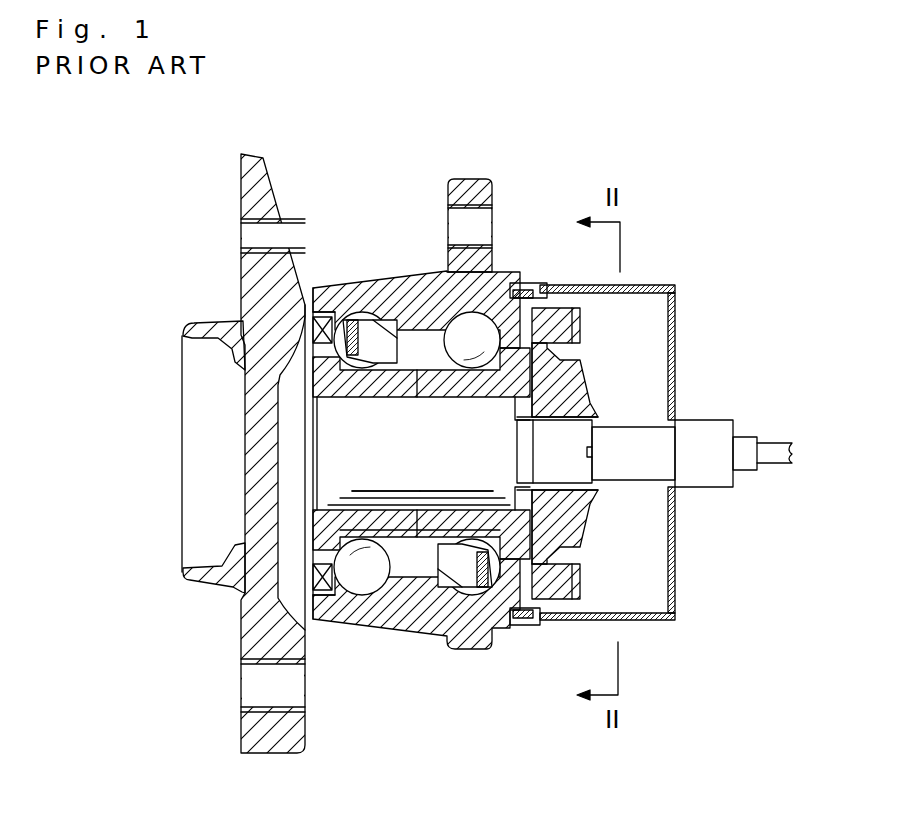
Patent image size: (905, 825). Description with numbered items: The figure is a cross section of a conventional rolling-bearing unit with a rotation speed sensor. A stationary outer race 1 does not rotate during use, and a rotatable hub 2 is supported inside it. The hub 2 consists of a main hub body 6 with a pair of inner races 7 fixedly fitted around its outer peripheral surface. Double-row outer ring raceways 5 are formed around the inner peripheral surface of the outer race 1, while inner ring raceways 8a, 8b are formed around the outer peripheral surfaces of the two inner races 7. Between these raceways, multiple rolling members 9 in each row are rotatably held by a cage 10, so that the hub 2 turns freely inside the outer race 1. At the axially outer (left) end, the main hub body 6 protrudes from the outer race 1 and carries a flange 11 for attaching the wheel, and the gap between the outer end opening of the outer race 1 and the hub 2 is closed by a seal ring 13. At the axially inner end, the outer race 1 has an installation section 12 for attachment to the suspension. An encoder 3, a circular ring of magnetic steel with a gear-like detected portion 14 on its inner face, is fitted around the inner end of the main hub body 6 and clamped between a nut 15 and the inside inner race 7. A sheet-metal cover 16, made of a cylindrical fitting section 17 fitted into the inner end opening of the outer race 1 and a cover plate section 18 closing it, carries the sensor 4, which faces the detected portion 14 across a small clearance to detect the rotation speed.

The outer race 1 is at (400, 293).
The hub 2 is at (422, 538).
The encoder 3 is at (548, 587).
The sensor 4 is at (703, 432).
The outer ring raceways 5 is at (307, 338).
The main hub body 6 is at (337, 492).
The inner races 7 is at (540, 288).
The inner ring raceway 8a is at (366, 510).
The inner ring raceway 8b is at (480, 510).
The rolling members 9 is at (463, 328).
The cage 10 is at (378, 343).
The flange 11 is at (295, 735).
The installation section 12 is at (462, 192).
The seal ring 13 is at (337, 570).
The detected portion 14 is at (573, 582).
The nut 15 is at (580, 387).
The cover 16 is at (677, 549).
The cylindrical fitting section 17 is at (632, 285).
The cover plate section 18 is at (677, 503).